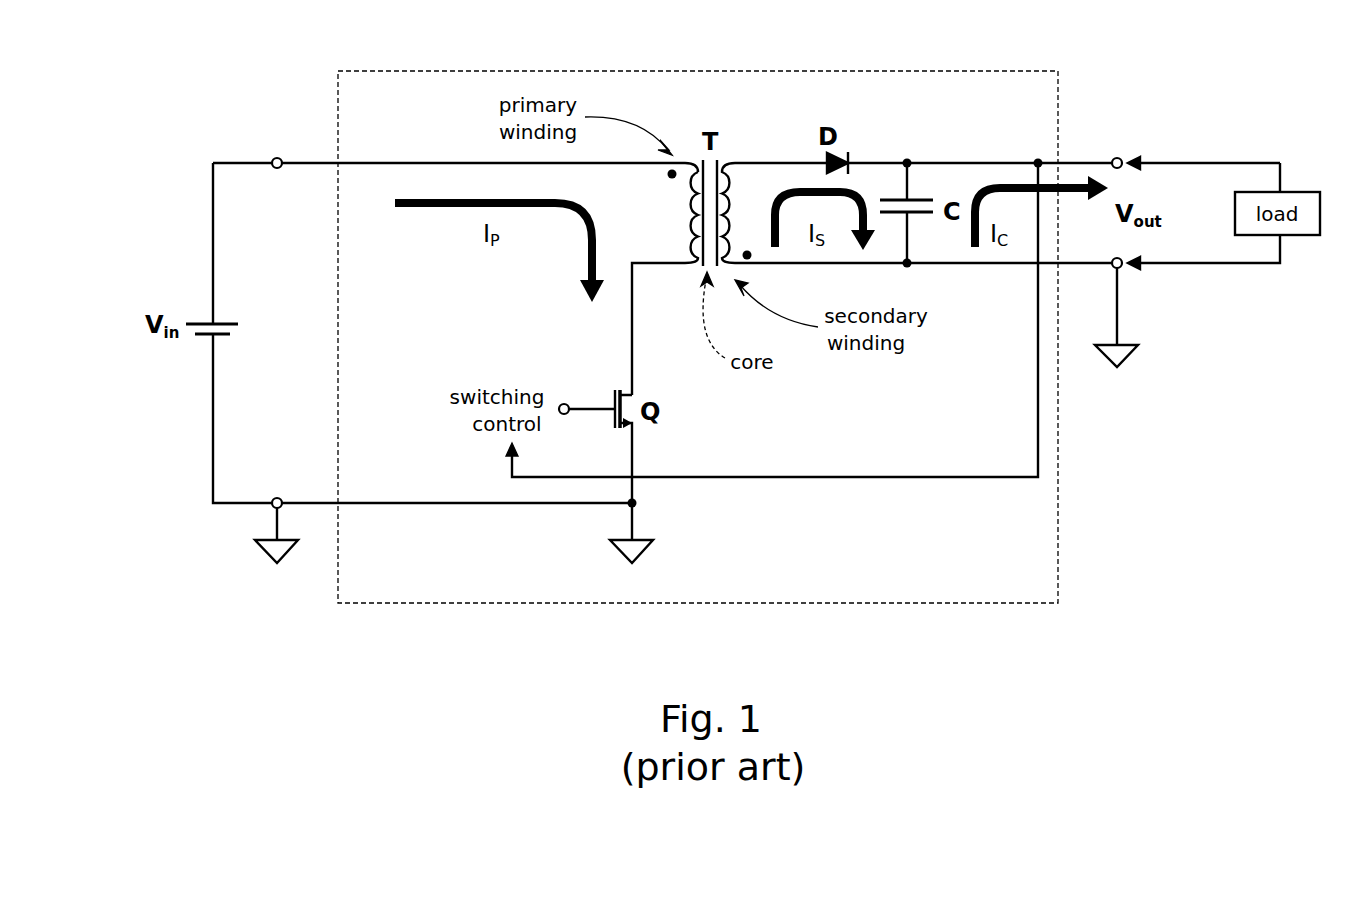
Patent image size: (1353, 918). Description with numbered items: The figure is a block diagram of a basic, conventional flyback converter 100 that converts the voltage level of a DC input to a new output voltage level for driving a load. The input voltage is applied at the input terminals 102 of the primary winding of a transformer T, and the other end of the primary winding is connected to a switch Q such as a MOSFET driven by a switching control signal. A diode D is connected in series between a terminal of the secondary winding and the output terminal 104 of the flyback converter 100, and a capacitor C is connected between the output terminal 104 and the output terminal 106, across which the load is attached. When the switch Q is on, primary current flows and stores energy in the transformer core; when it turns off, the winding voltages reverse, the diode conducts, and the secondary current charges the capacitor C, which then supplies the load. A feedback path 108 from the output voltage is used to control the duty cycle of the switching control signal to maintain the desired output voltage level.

The flyback converter 100 is at (1058, 548).
The input terminals 102 is at (277, 498).
The output terminal 104 is at (1121, 158).
The output terminal 106 is at (1120, 268).
The feedback path 108 is at (875, 480).